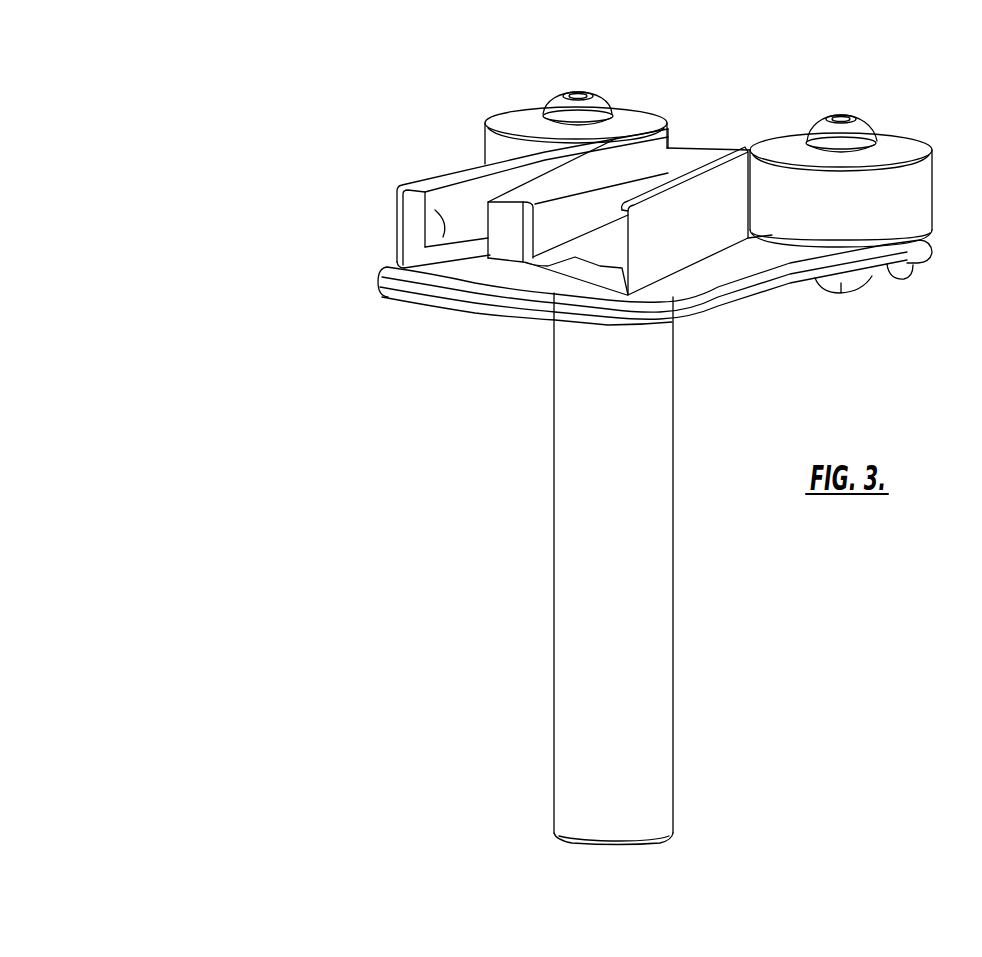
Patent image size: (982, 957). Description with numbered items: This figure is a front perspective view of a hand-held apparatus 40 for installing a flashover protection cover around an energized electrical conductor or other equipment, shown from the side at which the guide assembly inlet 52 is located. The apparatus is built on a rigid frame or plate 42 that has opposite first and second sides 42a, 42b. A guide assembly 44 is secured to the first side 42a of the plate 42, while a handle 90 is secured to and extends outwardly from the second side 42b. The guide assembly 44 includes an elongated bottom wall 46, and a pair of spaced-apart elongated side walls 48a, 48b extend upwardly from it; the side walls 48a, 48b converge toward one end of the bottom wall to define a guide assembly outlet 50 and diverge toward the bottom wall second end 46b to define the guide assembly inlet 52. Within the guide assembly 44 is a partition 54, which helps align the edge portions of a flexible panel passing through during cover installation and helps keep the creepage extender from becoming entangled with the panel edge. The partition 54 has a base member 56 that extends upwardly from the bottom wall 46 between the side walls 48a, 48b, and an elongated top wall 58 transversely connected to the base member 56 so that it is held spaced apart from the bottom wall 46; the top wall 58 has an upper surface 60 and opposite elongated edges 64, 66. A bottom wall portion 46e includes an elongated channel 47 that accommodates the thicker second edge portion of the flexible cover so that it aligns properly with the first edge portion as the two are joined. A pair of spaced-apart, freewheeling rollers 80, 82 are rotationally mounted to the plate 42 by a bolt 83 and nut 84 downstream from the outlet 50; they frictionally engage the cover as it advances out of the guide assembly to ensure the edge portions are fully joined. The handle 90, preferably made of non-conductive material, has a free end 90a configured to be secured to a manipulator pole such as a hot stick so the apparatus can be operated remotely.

The hand-held apparatus 40 is at (288, 367).
The rigid plate 42 is at (768, 294).
The first side of plate 42a is at (707, 275).
The second side of plate 42b is at (890, 268).
The guide assembly 44 is at (420, 162).
The elongated bottom wall 46 is at (483, 260).
The bottom wall second end 46b is at (510, 277).
The bottom wall portion 46e is at (580, 260).
The elongated channel 47 is at (557, 253).
The first elongated side wall 48a is at (733, 148).
The second elongated side wall 48b is at (455, 174).
The guide assembly outlet 50 is at (668, 132).
The guide assembly inlet 52 is at (507, 233).
The partition 54 is at (682, 147).
The base member 56 is at (423, 244).
The elongated top wall 58 is at (547, 183).
The upper surface of top wall 60 is at (631, 180).
The first elongated edge of top wall 64 is at (693, 158).
The second elongated edge of top wall 66 is at (583, 163).
The first roller 80 is at (505, 116).
The second roller 82 is at (900, 143).
The bolt 83 is at (559, 101).
The nut 84 is at (860, 282).
The handle 90 is at (645, 667).
The free end of handle 90a is at (617, 847).